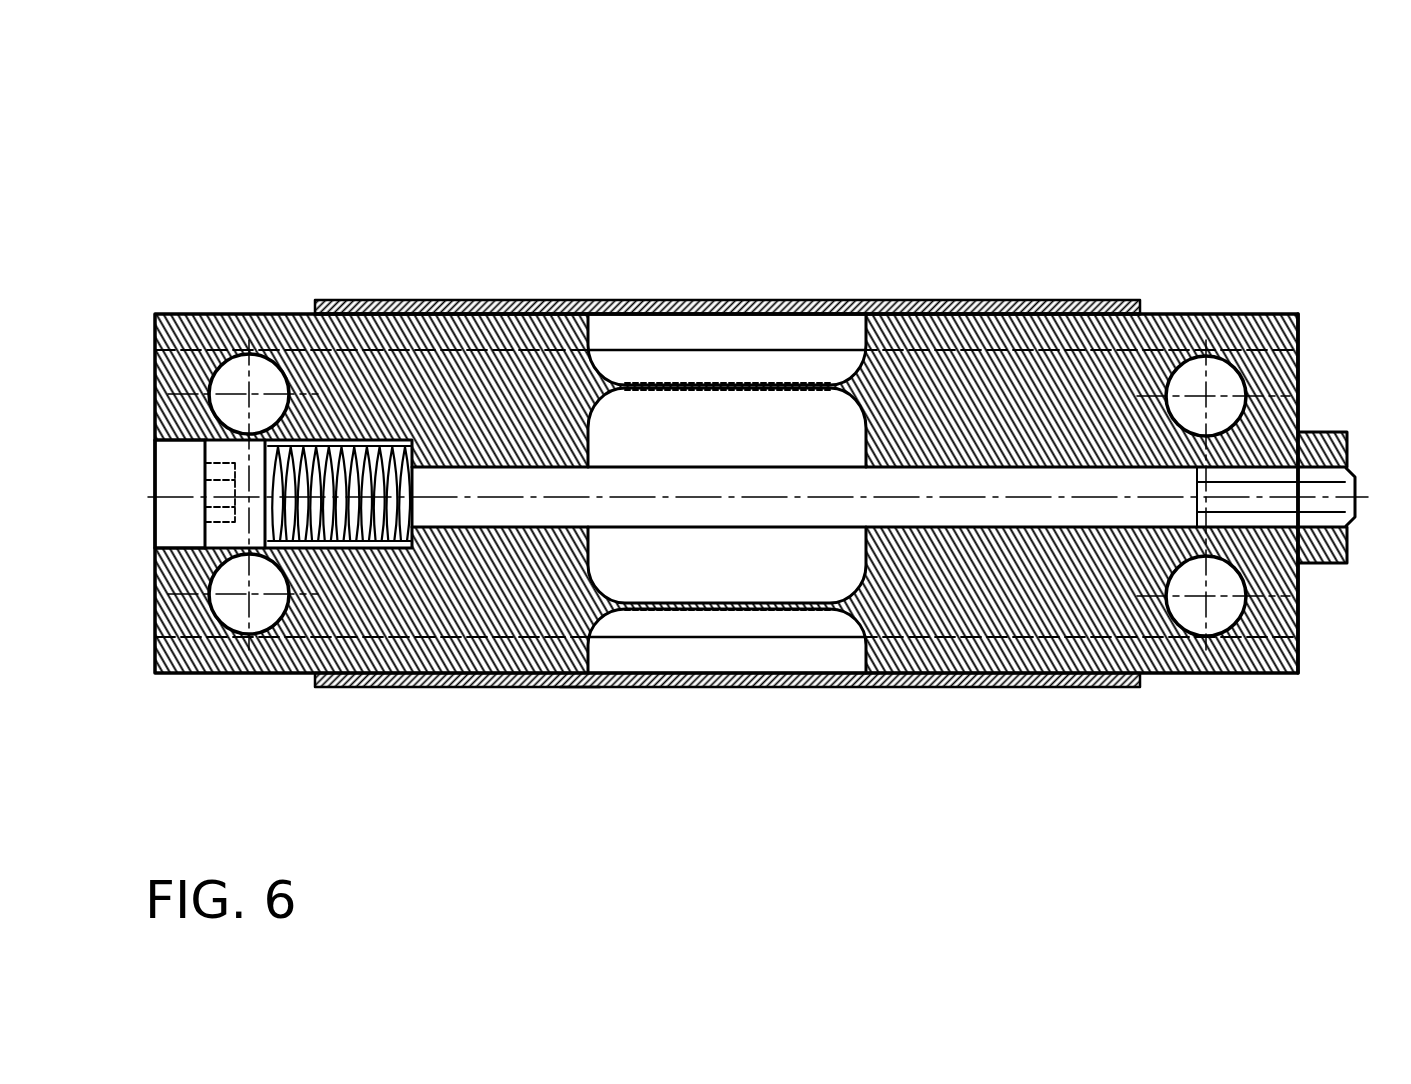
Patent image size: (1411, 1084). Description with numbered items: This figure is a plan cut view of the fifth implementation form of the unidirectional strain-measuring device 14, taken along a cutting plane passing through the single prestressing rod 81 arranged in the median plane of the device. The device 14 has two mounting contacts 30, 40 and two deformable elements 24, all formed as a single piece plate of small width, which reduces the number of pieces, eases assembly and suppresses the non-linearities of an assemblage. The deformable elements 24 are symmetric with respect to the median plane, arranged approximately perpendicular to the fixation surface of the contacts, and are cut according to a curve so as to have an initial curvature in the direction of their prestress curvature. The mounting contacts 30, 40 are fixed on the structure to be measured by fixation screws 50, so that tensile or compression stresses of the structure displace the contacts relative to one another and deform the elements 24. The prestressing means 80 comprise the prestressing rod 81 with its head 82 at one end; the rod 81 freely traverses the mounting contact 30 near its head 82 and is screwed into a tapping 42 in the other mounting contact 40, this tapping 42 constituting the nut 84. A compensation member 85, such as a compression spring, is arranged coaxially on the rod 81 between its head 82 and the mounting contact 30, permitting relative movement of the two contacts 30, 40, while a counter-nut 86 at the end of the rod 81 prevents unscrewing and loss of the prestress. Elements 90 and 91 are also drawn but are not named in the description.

The strain-measuring device 14 is at (822, 236).
The deformable element 24 is at (683, 383).
The mounting contact 30 is at (407, 603).
The mounting contact 40 is at (1258, 638).
The tapping 42 is at (1198, 530).
The fixation screw 50 is at (232, 355).
The prestressing means 80 is at (188, 480).
The prestressing rod 81 is at (998, 512).
The head 82 is at (212, 535).
The nut 84 is at (1267, 465).
The compensation member 85 is at (326, 505).
The counter-nut 86 is at (1327, 455).
The sleeve 90 is at (438, 295).
The sleeve end 91 is at (572, 688).